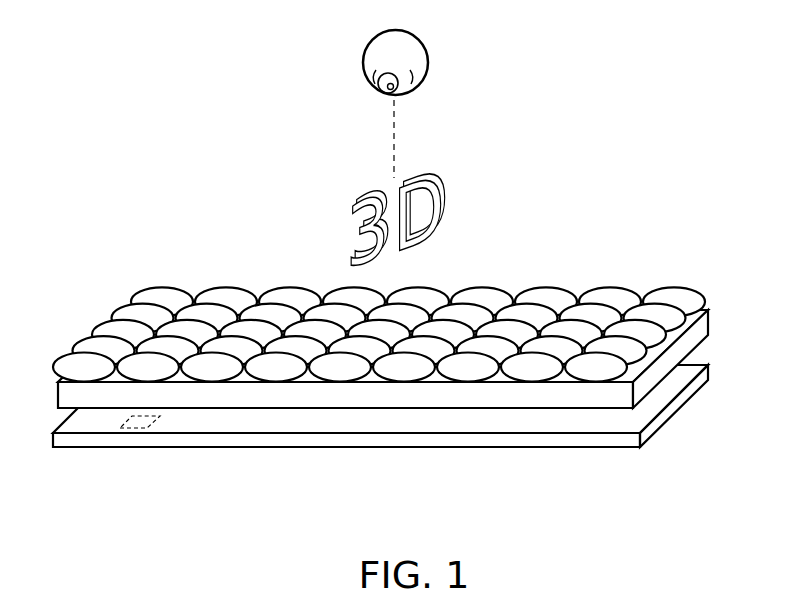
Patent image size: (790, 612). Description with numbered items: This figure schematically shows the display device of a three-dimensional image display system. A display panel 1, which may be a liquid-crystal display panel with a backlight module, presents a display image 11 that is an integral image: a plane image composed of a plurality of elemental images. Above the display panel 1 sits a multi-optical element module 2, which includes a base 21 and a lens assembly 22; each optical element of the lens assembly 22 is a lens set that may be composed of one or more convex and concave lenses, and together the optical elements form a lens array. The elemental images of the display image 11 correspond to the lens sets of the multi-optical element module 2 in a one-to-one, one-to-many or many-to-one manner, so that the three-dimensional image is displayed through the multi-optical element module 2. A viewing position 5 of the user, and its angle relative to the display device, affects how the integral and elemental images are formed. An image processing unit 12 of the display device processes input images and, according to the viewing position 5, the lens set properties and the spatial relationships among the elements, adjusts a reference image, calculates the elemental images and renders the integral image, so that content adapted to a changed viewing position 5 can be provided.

The display panel 1 is at (686, 409).
The display image 11 is at (552, 420).
The image processing unit 12 is at (140, 420).
The multi-optical element module 2 is at (712, 316).
The base 21 is at (689, 338).
The lens assembly 22 is at (670, 292).
The viewing position 5 is at (432, 52).